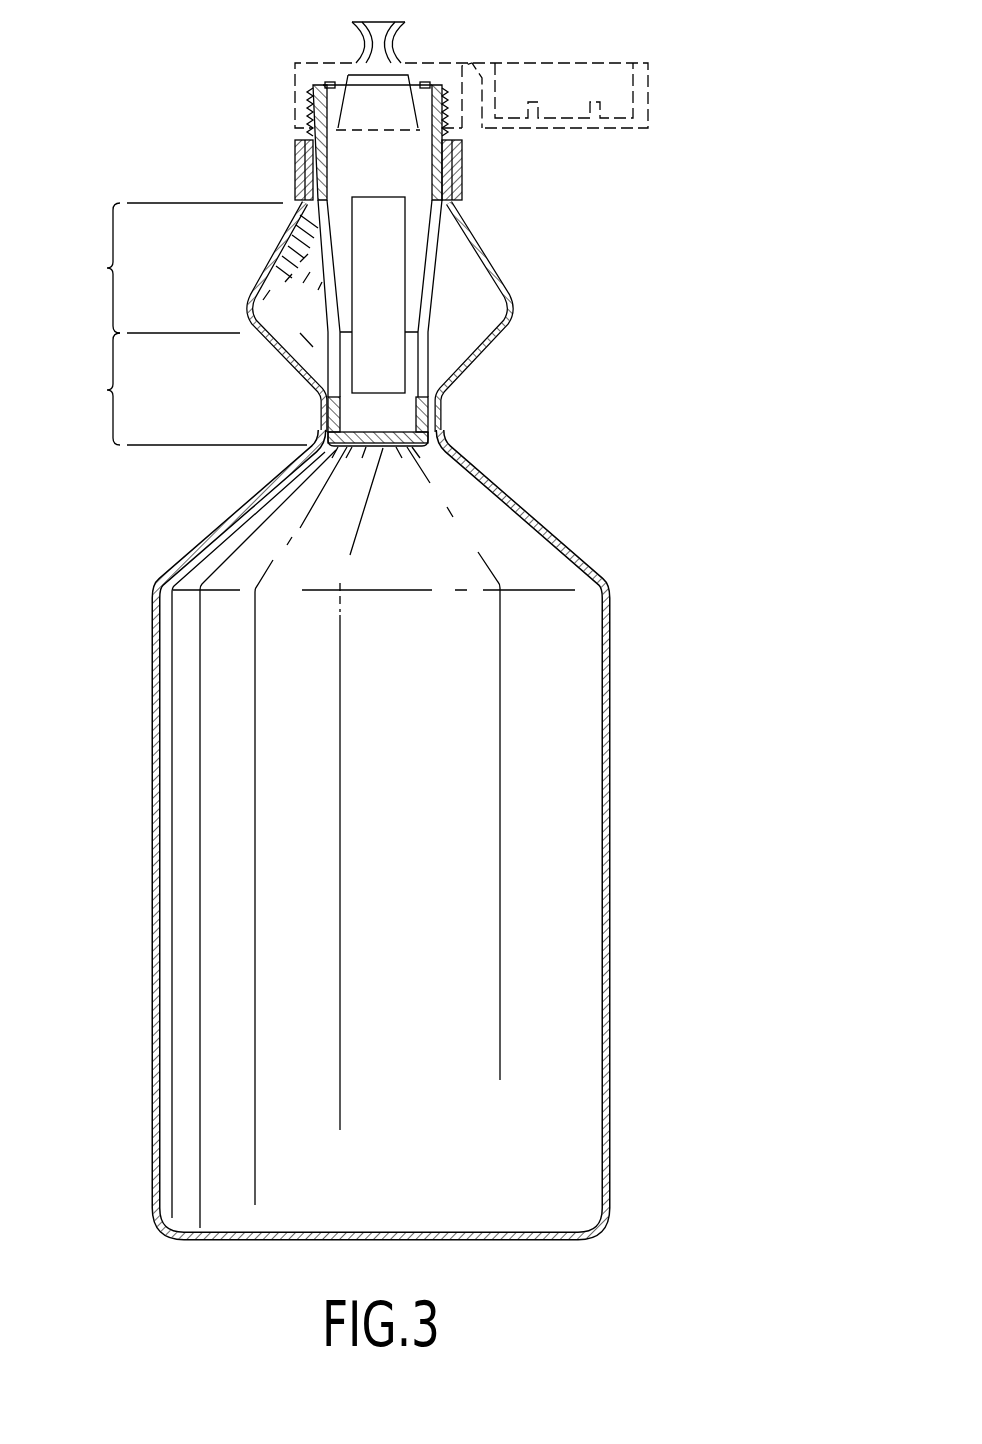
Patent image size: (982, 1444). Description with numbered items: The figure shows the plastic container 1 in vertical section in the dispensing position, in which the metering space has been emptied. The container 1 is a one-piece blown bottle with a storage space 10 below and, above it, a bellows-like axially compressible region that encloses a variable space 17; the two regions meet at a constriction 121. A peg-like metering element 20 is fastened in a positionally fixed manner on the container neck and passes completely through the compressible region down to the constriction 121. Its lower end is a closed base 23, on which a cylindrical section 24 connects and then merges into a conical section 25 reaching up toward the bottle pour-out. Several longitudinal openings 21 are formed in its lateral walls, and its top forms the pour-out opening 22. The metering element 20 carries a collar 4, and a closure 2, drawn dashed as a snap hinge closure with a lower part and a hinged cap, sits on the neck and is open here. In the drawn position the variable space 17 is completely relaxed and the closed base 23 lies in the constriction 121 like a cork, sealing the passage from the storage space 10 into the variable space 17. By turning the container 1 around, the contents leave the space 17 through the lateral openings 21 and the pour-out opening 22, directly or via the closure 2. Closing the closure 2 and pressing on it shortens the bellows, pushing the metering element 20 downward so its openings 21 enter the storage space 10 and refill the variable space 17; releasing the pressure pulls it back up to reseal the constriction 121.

The plastic container 1 is at (481, 367).
The closure 2 is at (666, 96).
The collar 4 is at (447, 158).
The storage space 10 is at (386, 904).
The variable space 17 is at (313, 325).
The metering element 20 is at (464, 246).
The longitudinal openings 21 is at (372, 262).
The pour-out opening 22 is at (348, 170).
The closed base 23 is at (360, 450).
The cylindrical section 24 is at (187, 389).
The conical section 25 is at (175, 268).
The constriction 121 is at (320, 403).